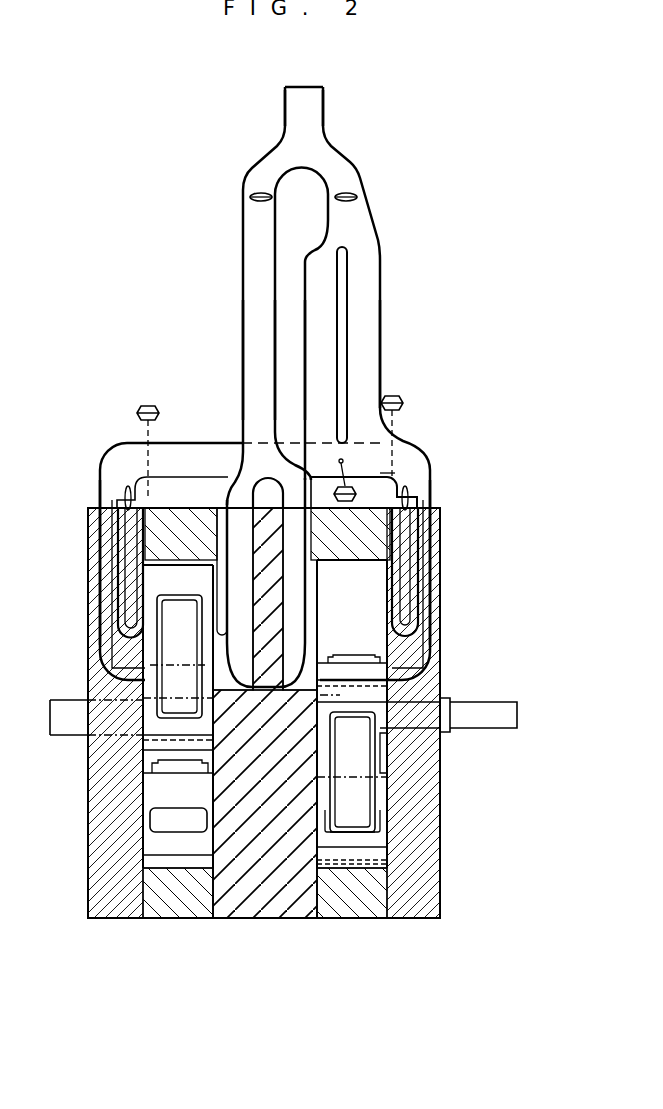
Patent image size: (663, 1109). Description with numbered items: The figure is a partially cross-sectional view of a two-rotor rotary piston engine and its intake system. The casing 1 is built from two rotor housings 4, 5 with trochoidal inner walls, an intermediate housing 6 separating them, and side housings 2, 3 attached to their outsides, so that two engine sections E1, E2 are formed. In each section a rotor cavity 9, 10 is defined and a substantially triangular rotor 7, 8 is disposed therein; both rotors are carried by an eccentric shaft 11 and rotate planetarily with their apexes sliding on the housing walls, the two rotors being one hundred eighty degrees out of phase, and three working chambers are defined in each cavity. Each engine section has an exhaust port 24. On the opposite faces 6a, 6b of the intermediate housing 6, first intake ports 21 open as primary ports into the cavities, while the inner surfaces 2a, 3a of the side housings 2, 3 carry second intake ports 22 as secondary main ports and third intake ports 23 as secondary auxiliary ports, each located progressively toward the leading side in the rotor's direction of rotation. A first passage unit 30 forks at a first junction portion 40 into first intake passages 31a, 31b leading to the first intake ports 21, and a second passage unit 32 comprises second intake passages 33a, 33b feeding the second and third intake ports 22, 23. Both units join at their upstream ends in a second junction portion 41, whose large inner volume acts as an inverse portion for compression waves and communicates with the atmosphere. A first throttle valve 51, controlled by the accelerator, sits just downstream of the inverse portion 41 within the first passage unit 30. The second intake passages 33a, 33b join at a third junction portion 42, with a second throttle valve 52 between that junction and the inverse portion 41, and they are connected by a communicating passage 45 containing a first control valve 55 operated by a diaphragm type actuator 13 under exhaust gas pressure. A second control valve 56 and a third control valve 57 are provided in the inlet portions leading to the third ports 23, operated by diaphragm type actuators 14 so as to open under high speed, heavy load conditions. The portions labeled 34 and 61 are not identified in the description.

The casing 1 is at (452, 907).
The side housing 2 is at (118, 922).
The inner surface of side housing 2a is at (145, 855).
The side housing 3 is at (415, 922).
The inner surface of side housing 3a is at (382, 847).
The rotor housing 4 is at (160, 922).
The rotor housing 5 is at (370, 922).
The intermediate housing 6 is at (270, 922).
The face of intermediate housing 6a is at (187, 922).
The face of intermediate housing 6b is at (342, 922).
The rotor 7 is at (150, 760).
The rotor 8 is at (403, 672).
The rotor cavity 9 is at (186, 796).
The rotor cavity 10 is at (366, 600).
The eccentric shaft 11 is at (520, 717).
The diaphragm type actuator 13 is at (300, 540).
The diaphragm type actuator 14 is at (145, 405).
The first intake port 21 is at (237, 660).
The second intake port 22 is at (127, 652).
The third intake port 23 is at (135, 622).
The exhaust port 24 is at (150, 820).
The first passage unit 30 is at (238, 257).
The first intake passage 31a is at (237, 537).
The first intake passage 31b is at (317, 560).
The second passage unit 32 is at (382, 262).
The second intake passage 33a is at (317, 315).
The second intake passage 33b is at (372, 280).
The bent portion 34 is at (377, 452).
The first junction portion 40 is at (252, 463).
The second junction portion 41 is at (303, 128).
The third junction portion 42 is at (347, 232).
The communicating passage 45 is at (341, 459).
The first throttle valve 51 is at (250, 192).
The second throttle valve 52 is at (357, 192).
The first control valve 55 is at (385, 473).
The second control valve 56 is at (125, 497).
The third control valve 57 is at (408, 493).
The slit passage 61 is at (364, 372).
The engine section E1 is at (166, 935).
The engine section E2 is at (380, 932).